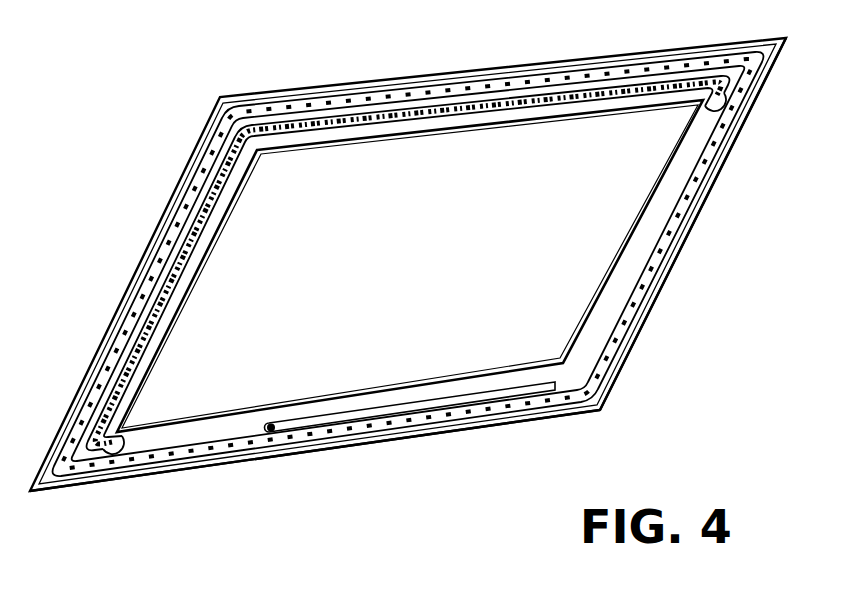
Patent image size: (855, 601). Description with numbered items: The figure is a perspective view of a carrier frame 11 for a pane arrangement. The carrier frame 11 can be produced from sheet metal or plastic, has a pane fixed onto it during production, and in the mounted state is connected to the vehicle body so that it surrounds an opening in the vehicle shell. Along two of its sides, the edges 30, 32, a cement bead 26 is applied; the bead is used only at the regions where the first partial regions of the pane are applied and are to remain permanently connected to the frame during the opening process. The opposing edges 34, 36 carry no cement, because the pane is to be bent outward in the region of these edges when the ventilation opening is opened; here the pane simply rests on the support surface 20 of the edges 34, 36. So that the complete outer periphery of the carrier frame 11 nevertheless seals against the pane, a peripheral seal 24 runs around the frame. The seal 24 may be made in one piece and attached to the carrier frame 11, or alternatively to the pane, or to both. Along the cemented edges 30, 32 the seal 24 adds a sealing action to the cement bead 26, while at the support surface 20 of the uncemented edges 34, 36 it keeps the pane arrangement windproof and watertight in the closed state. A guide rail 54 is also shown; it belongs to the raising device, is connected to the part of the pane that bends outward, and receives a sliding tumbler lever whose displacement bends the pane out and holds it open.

The carrier frame 11 is at (647, 247).
The support surface 20 is at (603, 323).
The peripheral seal 24 is at (202, 455).
The cement bead 26 is at (527, 103).
The edge 30 is at (157, 237).
The edge 32 is at (423, 75).
The edge 34 is at (717, 183).
The edge 36 is at (370, 445).
The guide rail 54 is at (480, 395).